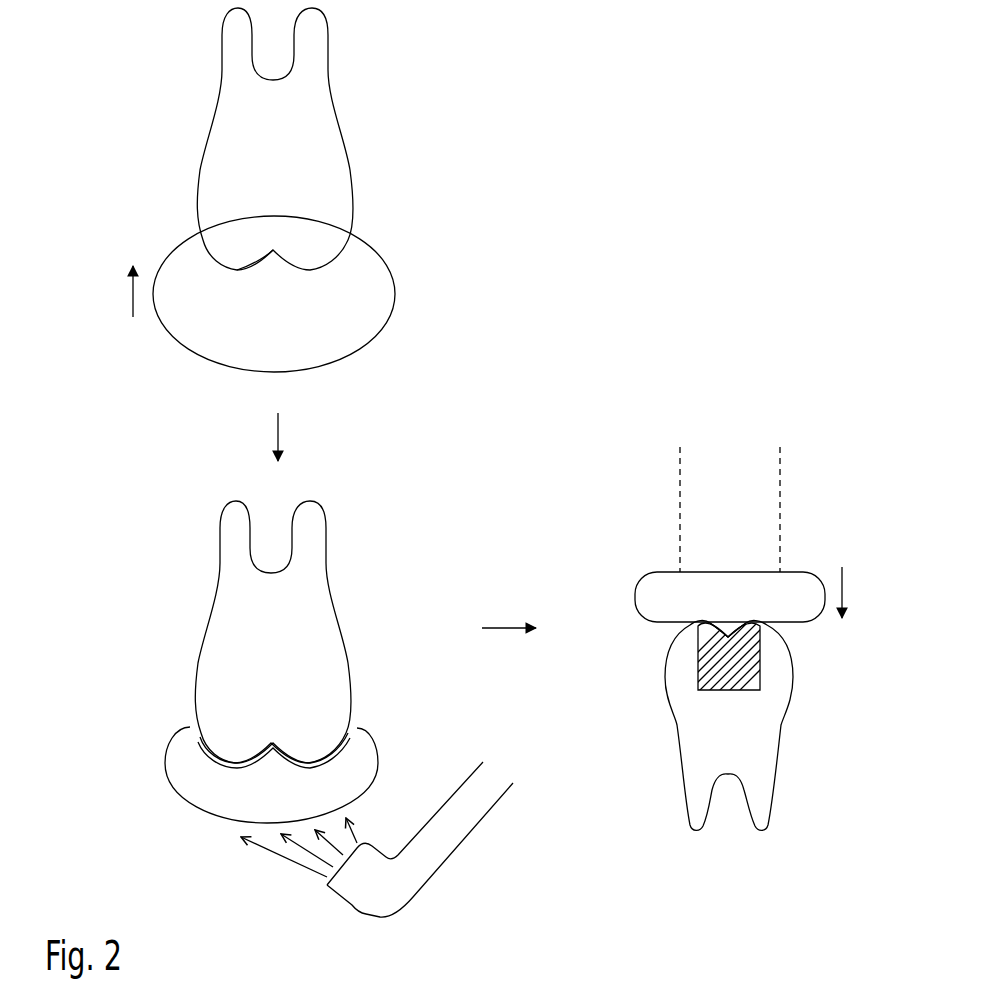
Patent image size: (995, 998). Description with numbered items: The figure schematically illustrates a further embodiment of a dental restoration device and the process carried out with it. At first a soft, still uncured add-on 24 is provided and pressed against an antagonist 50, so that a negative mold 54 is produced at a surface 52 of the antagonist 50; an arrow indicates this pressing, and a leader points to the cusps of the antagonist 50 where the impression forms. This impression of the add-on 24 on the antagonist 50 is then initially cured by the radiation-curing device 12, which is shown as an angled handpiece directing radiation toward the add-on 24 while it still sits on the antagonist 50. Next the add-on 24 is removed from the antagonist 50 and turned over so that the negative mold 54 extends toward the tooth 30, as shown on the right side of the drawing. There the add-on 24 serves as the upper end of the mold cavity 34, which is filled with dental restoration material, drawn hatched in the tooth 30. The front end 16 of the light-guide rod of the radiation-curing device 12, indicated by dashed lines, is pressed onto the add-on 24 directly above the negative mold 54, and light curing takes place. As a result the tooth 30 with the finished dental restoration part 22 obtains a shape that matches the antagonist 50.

The radiation-curing device 12 is at (438, 850).
The front end 16 is at (758, 500).
The dental restoration part 22 is at (747, 672).
The add-on 24 is at (375, 290).
The tooth 30 is at (753, 753).
The mold cavity 34 is at (750, 643).
The antagonist 50 is at (303, 597).
The surface 52 is at (236, 262).
The negative mold 54 is at (302, 91).